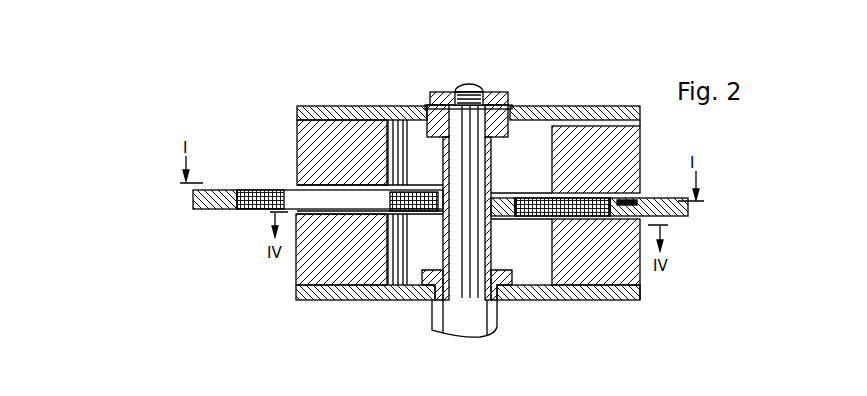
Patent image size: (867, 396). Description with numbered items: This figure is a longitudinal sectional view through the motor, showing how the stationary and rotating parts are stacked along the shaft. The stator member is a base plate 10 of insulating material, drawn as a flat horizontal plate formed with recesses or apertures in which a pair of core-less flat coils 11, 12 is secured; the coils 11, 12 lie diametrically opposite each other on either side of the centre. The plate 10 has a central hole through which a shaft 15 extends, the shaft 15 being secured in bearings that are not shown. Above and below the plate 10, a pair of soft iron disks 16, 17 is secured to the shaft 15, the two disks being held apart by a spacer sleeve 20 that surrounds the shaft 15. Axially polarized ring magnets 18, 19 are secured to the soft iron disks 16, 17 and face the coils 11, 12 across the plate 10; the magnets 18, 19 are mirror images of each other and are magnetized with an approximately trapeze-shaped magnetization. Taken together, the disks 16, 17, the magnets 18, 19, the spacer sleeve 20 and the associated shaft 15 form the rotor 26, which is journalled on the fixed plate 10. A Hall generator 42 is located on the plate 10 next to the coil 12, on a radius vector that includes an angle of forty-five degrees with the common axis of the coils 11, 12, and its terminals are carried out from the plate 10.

The base plate 10 is at (219, 209).
The flat coil 11 is at (255, 190).
The flat coil 12 is at (530, 198).
The shaft 15 is at (465, 223).
The soft iron disk 16 is at (339, 298).
The soft iron disk 17 is at (366, 108).
The ring magnet 18 is at (296, 268).
The ring magnet 19 is at (307, 157).
The spacer sleeve 20 is at (491, 240).
The rotor 26 is at (532, 93).
The Hall generator 42 is at (631, 199).